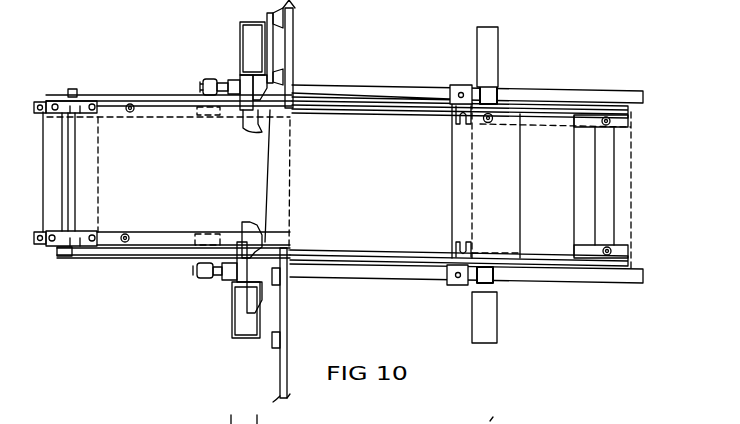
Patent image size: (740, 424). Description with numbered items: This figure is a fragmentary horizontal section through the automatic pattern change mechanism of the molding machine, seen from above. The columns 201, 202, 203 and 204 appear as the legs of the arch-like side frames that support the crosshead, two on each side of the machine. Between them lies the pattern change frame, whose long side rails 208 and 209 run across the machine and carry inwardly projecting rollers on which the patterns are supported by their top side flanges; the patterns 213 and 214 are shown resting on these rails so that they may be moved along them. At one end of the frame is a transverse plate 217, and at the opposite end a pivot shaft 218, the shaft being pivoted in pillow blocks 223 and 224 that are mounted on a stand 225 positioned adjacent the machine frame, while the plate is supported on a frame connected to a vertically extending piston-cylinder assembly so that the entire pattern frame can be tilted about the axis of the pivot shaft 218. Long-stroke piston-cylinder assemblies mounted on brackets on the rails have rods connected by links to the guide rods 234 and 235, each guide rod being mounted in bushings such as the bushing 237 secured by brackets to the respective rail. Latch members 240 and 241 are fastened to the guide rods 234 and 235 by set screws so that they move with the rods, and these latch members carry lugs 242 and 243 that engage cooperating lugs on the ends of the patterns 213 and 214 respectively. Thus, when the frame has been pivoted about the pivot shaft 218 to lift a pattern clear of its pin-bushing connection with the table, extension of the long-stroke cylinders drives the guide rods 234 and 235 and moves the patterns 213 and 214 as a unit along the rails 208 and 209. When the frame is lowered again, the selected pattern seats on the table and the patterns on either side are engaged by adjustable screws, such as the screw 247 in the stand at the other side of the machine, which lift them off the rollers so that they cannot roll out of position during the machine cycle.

The column 201 is at (243, 50).
The column 202 is at (237, 328).
The column 203 is at (498, 60).
The column 204 is at (490, 318).
The side rail 208 is at (166, 97).
The side rail 209 is at (158, 259).
The pattern 213 is at (450, 200).
The pattern 214 is at (632, 195).
The transverse plate 217 is at (568, 196).
The pivot shaft 218 is at (75, 182).
The pillow block 223 is at (60, 102).
The pillow block 224 is at (57, 248).
The stand 225 is at (171, 232).
The guide rod 234 is at (411, 96).
The guide rod 235 is at (352, 274).
The bushing 237 is at (485, 84).
The latch member 240 is at (455, 85).
The latch member 241 is at (455, 287).
The lug 242 is at (471, 108).
The lug 243 is at (466, 246).
The adjustable screw 247 is at (620, 122).